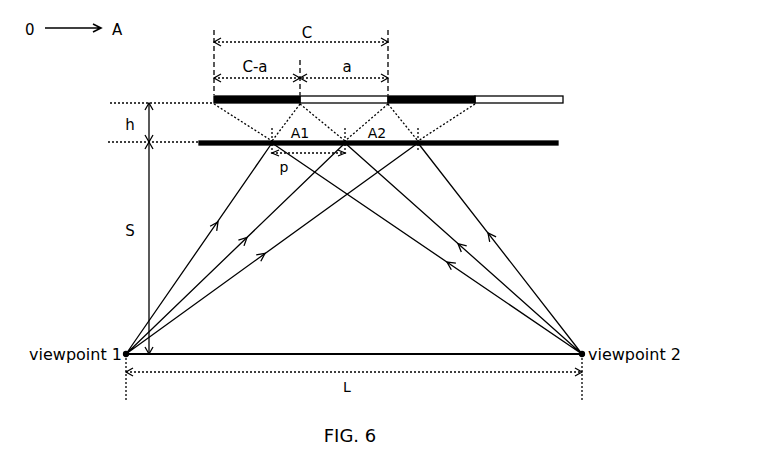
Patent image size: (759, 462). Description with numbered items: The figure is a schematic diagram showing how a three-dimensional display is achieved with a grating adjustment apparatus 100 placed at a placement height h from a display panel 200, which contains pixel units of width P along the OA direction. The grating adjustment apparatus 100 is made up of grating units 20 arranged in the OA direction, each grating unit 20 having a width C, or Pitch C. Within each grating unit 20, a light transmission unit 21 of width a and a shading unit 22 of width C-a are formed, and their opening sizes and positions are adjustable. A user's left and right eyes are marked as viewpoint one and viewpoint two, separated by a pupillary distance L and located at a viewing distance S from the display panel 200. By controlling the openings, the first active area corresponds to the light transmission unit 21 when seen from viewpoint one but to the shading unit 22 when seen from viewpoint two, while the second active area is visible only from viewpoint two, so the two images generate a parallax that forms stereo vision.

The grating unit 20 is at (388, 55).
The light transmission unit 21 is at (460, 38).
The shading unit 22 is at (446, 96).
The grating adjustment apparatus 100 is at (435, 55).
The display panel 200 is at (558, 143).